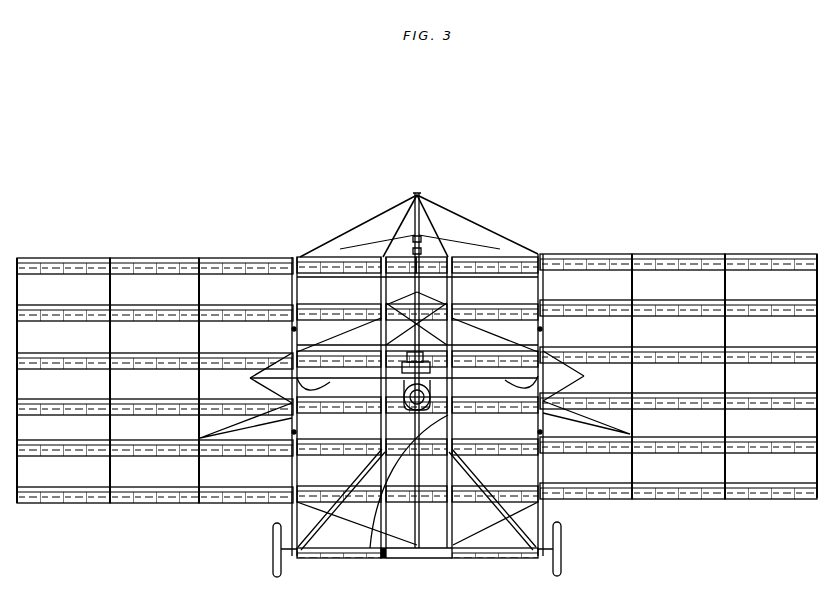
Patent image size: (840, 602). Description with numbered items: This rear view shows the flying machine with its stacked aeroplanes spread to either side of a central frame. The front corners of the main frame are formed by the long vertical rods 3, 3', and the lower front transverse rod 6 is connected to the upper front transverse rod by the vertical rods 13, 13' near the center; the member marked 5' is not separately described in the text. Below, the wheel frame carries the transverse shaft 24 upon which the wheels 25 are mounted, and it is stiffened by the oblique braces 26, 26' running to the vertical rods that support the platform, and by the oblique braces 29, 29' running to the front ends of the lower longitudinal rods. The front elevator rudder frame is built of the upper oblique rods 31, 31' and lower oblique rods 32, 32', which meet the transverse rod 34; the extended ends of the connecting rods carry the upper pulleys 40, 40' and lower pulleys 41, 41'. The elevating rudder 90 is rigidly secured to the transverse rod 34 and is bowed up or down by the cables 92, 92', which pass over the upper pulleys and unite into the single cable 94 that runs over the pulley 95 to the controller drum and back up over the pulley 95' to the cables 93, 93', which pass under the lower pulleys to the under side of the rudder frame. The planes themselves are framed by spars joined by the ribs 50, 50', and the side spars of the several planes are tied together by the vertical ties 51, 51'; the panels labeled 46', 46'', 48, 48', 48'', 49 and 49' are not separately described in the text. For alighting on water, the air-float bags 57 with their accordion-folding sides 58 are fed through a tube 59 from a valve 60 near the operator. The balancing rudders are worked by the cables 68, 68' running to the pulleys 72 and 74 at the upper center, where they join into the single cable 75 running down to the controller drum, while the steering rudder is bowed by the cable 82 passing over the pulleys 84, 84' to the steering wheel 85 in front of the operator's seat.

The vertical rod 3 is at (285, 348).
The vertical rod 3' is at (553, 347).
The wing panel 5' is at (339, 272).
The lower front transverse rod 6 is at (341, 499).
The vertical rod 13 is at (370, 402).
The vertical rod 13' is at (462, 402).
The transverse shaft 24 is at (425, 553).
The wheels 25 is at (272, 545).
The oblique brace 26 is at (339, 454).
The oblique brace 26' is at (495, 457).
The oblique brace 29 is at (278, 528).
The oblique brace 29' is at (559, 528).
The upper oblique rod 31 is at (339, 335).
The upper oblique rod 31' is at (495, 335).
The lower oblique rod 32 is at (304, 470).
The lower oblique rod 32' is at (526, 470).
The transverse rod 34 is at (455, 397).
The upper pulley 40 is at (278, 333).
The upper pulley 40' is at (558, 332).
The lower pulley 41 is at (278, 432).
The lower pulley 41' is at (555, 432).
The wing cell 46' is at (246, 273).
The wing cell 46'' is at (678, 267).
The wing cell 48 is at (63, 457).
The wing cell 48' is at (371, 345).
The wing cell 48'' is at (678, 411).
The wing cell 49 is at (154, 397).
The wing cell 49' is at (678, 367).
The rib 50 is at (154, 440).
The rib 50' is at (771, 268).
The vertical tie 51 is at (154, 380).
The vertical tie 51' is at (718, 376).
The air-float bag 57 is at (367, 557).
The sides 58 is at (385, 558).
The tube 59 is at (447, 456).
The valve 60 is at (438, 360).
The cable 68 is at (358, 226).
The cable 68' is at (477, 224).
The pulley 72 is at (397, 226).
The pulley 74 is at (432, 226).
The single cable 75 is at (413, 250).
The cable 82 is at (230, 428).
The pulley 84 is at (231, 420).
The pulley 84' is at (598, 420).
The steering wheel 85 is at (408, 395).
The elevating rudder 90 is at (543, 376).
The cable 92 is at (341, 335).
The cable 92' is at (462, 337).
The cable 93 is at (326, 385).
The cable 93' is at (520, 382).
The single cable 94 is at (420, 290).
The pulley 95 is at (431, 265).
The pulley 95' is at (401, 265).